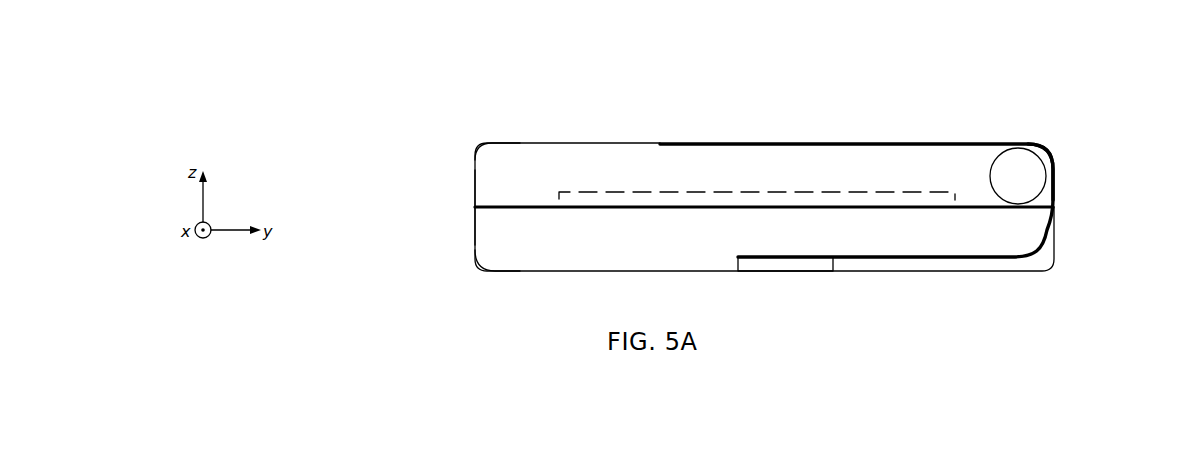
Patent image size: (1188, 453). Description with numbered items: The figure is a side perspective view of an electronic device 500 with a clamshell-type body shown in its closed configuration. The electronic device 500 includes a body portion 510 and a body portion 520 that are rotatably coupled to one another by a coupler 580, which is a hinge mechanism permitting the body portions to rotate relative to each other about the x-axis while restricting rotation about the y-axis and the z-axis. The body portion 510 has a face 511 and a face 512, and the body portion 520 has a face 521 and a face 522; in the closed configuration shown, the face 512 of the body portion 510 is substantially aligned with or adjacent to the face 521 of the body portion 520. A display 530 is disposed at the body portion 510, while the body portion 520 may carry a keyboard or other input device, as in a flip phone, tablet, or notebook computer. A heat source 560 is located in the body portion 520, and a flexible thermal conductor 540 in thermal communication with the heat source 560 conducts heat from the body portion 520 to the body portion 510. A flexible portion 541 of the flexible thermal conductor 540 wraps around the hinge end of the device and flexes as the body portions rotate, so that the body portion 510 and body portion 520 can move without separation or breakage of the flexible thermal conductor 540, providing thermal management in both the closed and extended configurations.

The electronic device 500 is at (340, 134).
The body portion 510 is at (642, 141).
The face 511 is at (505, 131).
The face 512 is at (473, 190).
The body portion 520 is at (1041, 272).
The face 521 is at (474, 220).
The face 522 is at (505, 282).
The display 530 is at (716, 209).
The flexible thermal conductor 540 is at (958, 268).
The flexible portion 541 is at (1072, 159).
The heat source 560 is at (835, 262).
The coupler 580 is at (990, 173).